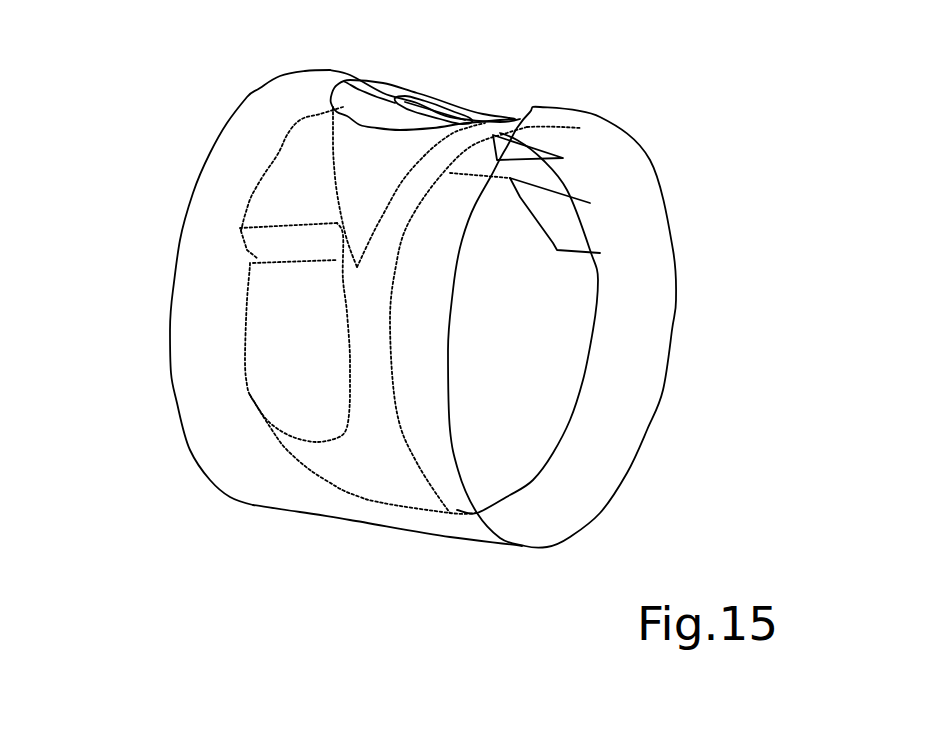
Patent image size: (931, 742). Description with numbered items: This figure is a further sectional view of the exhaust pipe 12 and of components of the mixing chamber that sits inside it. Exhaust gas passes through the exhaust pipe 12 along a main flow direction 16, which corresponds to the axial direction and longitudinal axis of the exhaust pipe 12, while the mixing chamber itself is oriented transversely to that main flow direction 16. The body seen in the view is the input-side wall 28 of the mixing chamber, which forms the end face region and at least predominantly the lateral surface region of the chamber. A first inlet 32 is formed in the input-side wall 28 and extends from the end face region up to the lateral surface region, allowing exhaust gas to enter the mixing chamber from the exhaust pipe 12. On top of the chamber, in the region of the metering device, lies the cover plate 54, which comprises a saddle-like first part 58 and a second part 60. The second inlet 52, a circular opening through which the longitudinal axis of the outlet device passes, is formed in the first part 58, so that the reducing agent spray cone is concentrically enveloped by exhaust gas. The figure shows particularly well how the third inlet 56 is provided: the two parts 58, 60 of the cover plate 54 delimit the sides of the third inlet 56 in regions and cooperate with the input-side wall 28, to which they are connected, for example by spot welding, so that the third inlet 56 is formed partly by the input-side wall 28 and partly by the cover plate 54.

The exhaust pipe 12 is at (650, 384).
The main flow direction 16 is at (184, 292).
The input-side wall 28 is at (247, 416).
The first inlet 32 is at (277, 236).
The second inlet 52 is at (430, 100).
The cover plate 54 is at (370, 110).
The third inlet 56 is at (533, 107).
The first part 58 is at (350, 167).
The second part 60 is at (587, 223).